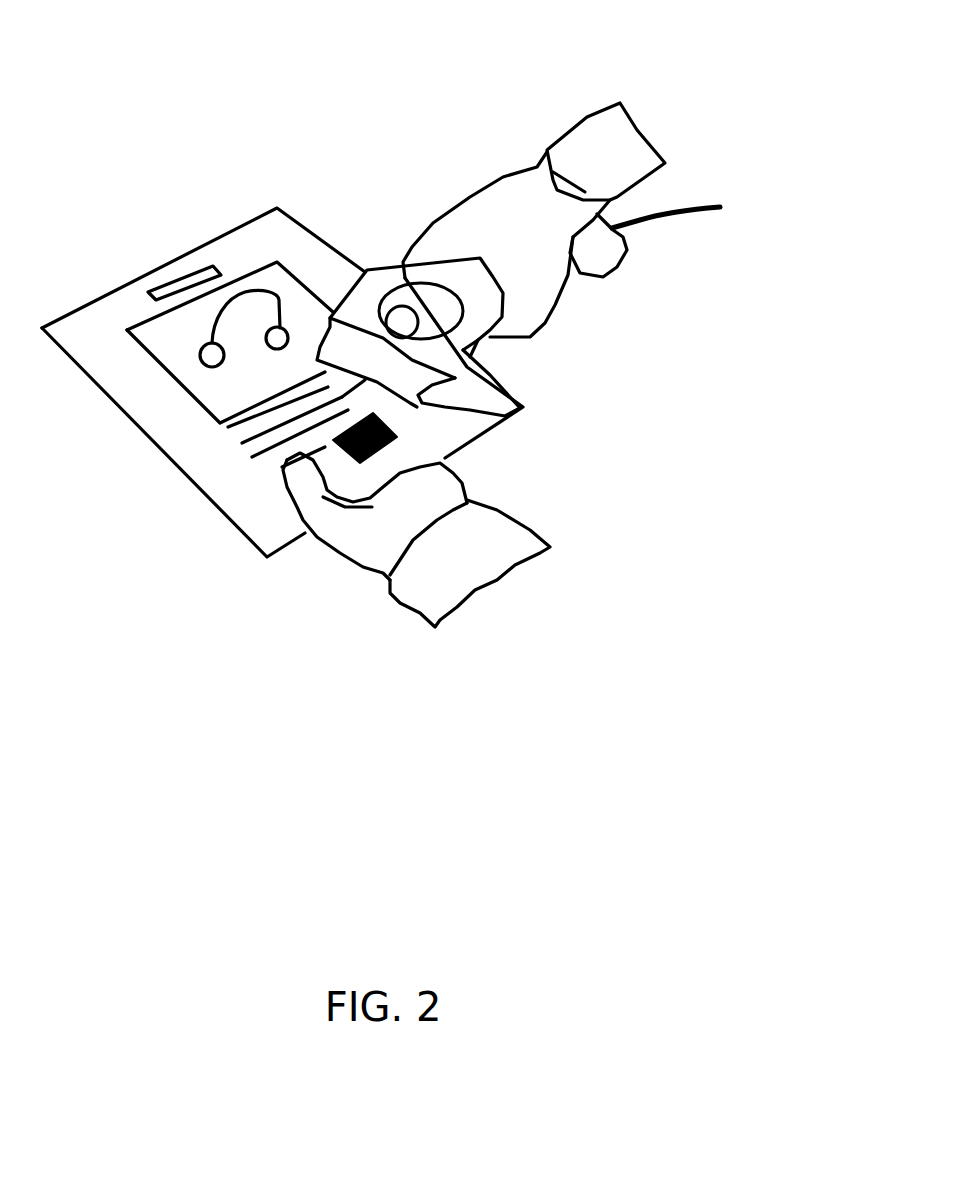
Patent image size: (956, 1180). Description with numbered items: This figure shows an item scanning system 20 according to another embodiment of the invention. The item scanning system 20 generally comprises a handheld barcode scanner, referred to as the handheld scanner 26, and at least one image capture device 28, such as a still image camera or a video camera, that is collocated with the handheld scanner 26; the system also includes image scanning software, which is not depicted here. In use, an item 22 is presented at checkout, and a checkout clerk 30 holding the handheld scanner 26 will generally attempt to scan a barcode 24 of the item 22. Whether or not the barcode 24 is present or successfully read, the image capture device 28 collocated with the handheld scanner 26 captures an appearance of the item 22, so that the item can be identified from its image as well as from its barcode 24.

The item scanning system 20 is at (229, 130).
The item 22 is at (96, 322).
The barcode 24 is at (378, 446).
The handheld scanner 26 is at (483, 353).
The image capture device 28 is at (413, 297).
The checkout clerk 30 is at (586, 118).